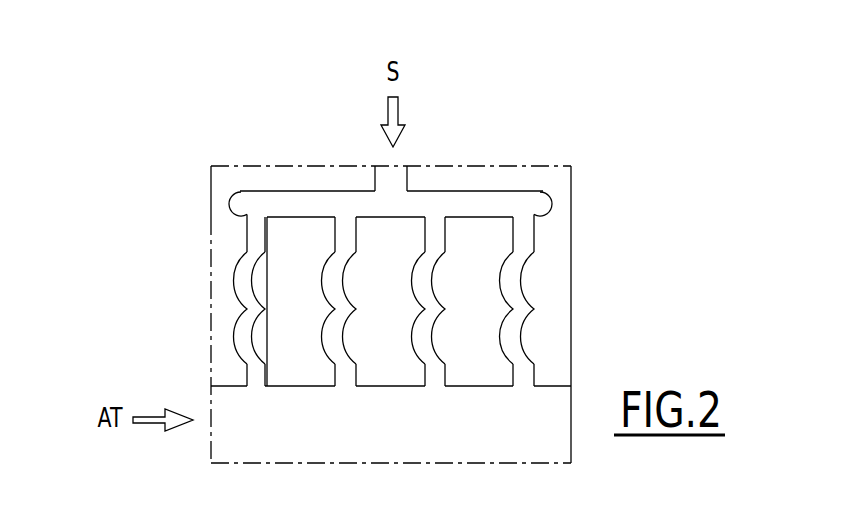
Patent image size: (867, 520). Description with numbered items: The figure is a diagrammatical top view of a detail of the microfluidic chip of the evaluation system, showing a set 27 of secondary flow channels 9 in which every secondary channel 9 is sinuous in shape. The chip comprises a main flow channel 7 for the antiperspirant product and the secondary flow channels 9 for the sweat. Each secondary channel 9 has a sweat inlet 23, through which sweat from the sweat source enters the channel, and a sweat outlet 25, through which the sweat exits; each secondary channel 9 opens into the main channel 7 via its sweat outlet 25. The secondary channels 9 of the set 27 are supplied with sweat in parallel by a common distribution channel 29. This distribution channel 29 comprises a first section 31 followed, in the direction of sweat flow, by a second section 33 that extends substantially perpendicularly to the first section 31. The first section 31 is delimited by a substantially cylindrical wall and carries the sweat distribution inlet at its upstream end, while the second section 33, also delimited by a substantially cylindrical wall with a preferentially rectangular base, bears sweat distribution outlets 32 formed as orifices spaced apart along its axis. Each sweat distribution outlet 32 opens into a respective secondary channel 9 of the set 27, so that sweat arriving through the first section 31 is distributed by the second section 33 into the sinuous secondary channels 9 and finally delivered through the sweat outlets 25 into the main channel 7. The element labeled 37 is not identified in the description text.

The main flow channel 7 is at (522, 430).
The secondary flow channel 9 is at (321, 286).
The sweat inlet 23 is at (245, 233).
The sweat outlet 25 is at (255, 386).
The set of secondary channels 27 is at (110, 228).
The distribution channel 29 is at (560, 173).
The first section 31 is at (388, 179).
The sweat distribution outlet 32 is at (240, 191).
The second section 33 is at (275, 205).
The tooth wave crest 37 is at (325, 275).